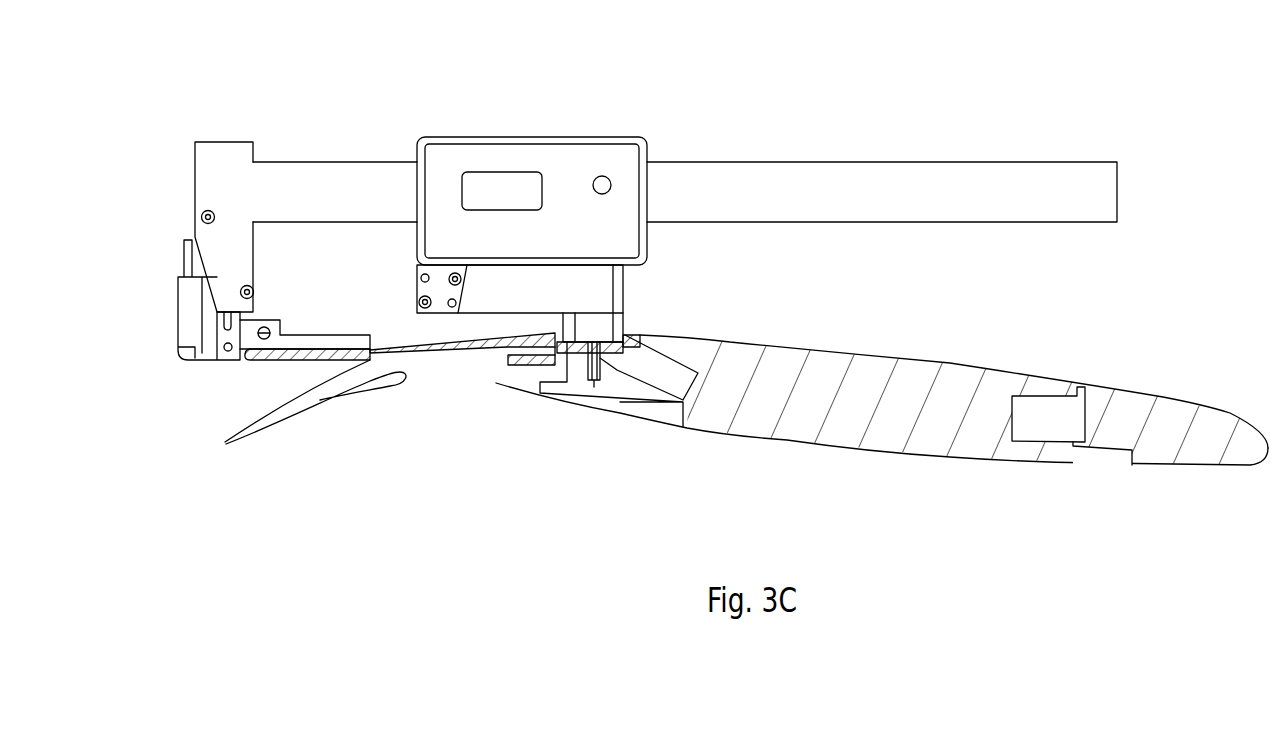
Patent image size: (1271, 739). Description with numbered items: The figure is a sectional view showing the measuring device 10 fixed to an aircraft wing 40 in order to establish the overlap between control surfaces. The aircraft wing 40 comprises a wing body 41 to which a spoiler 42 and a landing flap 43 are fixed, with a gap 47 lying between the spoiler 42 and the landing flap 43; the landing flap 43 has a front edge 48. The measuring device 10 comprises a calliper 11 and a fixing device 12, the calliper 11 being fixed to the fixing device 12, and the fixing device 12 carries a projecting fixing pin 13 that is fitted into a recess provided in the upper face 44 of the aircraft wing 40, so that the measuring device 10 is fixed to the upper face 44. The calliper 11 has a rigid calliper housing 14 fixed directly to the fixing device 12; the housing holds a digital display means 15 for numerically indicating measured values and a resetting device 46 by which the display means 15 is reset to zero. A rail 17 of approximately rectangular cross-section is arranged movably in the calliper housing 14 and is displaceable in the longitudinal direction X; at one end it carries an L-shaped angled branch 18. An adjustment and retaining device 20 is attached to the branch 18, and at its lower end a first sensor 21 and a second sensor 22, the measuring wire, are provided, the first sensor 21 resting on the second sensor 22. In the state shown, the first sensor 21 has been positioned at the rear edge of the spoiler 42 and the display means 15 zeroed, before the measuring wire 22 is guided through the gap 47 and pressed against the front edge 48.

The measuring device 10 is at (148, 120).
The calliper 11 is at (697, 92).
The fixing device 12 is at (598, 292).
The fixing pin 13 is at (597, 387).
The calliper housing 14 is at (445, 158).
The display means 15 is at (522, 180).
The rail 17 is at (358, 172).
The branch 18 is at (226, 152).
The adjustment and retaining device 20 is at (150, 331).
The first sensor 21 is at (313, 340).
The second sensor 22 is at (328, 356).
The aircraft wing 40 is at (1243, 348).
The wing body 41 is at (899, 440).
The spoiler 42 is at (470, 346).
The landing flap 43 is at (285, 410).
The upper face 44 is at (933, 356).
The resetting device 46 is at (603, 176).
The gap 47 is at (412, 362).
The front edge 48 is at (376, 372).